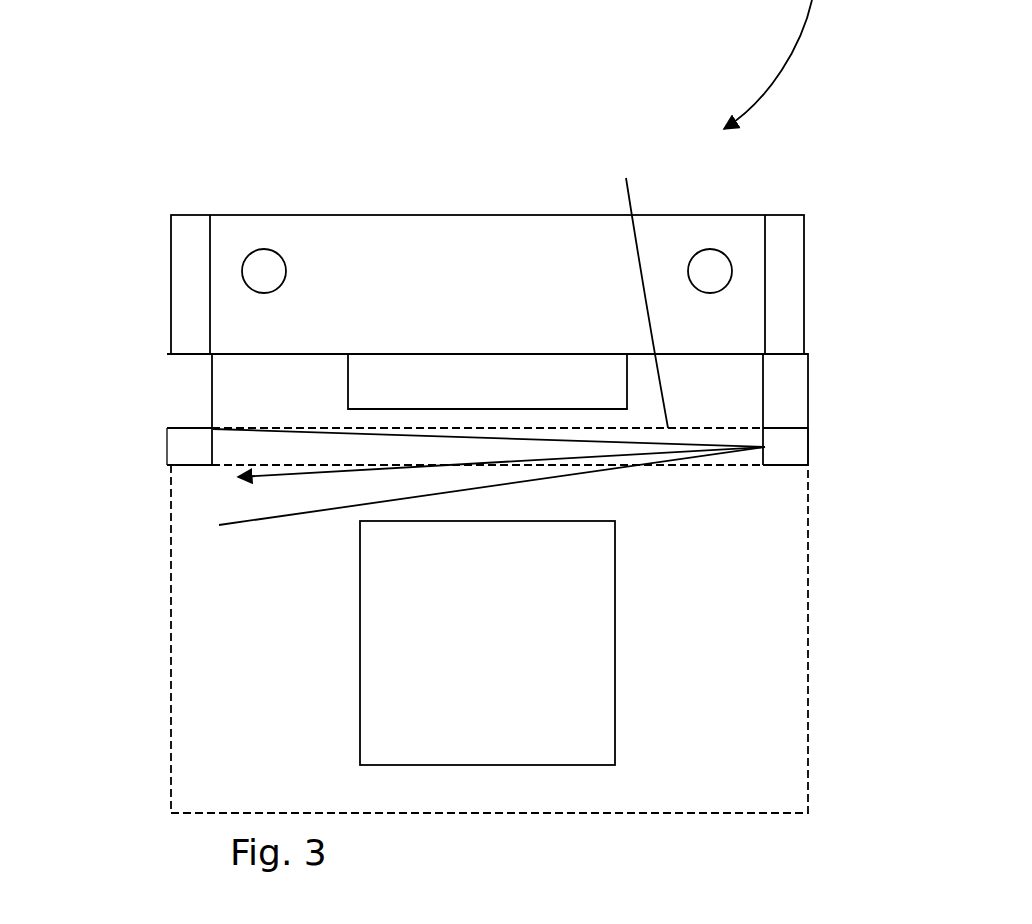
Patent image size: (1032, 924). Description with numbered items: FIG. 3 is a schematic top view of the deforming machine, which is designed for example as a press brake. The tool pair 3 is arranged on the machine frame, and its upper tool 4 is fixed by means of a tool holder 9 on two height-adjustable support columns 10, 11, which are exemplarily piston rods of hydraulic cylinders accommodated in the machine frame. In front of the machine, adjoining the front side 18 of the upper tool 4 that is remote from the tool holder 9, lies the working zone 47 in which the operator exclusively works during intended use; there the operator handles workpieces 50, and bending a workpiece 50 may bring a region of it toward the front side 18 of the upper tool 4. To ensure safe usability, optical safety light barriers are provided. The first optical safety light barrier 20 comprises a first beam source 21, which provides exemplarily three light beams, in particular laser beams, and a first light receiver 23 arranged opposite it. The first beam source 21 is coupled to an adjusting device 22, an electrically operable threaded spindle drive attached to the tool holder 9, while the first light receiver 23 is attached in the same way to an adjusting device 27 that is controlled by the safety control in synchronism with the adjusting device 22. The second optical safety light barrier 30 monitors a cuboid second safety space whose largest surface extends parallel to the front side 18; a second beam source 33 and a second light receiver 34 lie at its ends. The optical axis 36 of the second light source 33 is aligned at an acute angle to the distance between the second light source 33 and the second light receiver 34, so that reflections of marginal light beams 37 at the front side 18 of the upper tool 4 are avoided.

The tool pair 3 is at (535, 378).
The upper tool 4 is at (462, 370).
The tool holder 9 is at (385, 235).
The support column 10 is at (263, 254).
The support column 11 is at (717, 257).
The front side of the upper tool 18 is at (425, 418).
The first optical safety light barrier 20 is at (157, 411).
The first beam source 21 is at (798, 378).
The adjusting device 22 is at (790, 257).
The first light receiver 23 is at (180, 378).
The adjusting device 27 is at (186, 251).
The second optical safety light barrier 30 is at (159, 450).
The second beam source 33 is at (794, 453).
The second light receiver 34 is at (177, 458).
The optical axis 36 is at (283, 474).
The marginal light beams 37 is at (557, 480).
The working zone 47 is at (807, 670).
The workpiece 50 is at (590, 717).